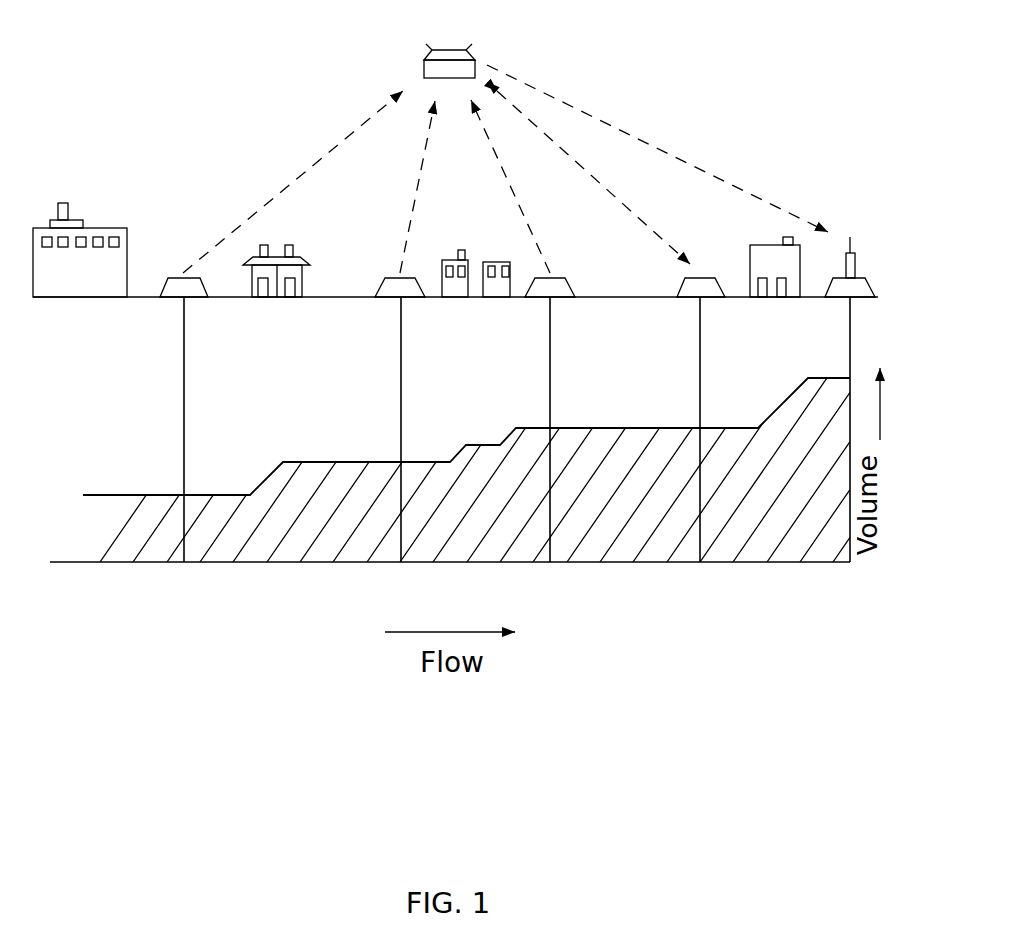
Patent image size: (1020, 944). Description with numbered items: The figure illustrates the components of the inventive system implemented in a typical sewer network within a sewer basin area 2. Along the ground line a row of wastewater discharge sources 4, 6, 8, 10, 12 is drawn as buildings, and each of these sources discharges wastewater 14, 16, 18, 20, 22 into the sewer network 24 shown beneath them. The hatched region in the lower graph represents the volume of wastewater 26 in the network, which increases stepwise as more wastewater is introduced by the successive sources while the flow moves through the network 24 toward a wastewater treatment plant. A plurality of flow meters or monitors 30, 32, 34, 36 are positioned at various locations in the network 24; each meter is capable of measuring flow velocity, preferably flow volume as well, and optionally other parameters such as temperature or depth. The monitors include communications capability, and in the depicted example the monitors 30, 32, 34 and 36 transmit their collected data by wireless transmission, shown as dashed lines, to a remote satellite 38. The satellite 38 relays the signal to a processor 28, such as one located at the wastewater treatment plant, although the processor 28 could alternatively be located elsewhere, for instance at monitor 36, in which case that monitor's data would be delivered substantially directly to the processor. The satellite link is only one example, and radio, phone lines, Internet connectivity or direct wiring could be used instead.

The sewer basin area 2 is at (163, 78).
The wastewater discharge source 4 is at (107, 257).
The wastewater discharge source 6 is at (297, 275).
The wastewater discharge source 8 is at (447, 290).
The wastewater discharge source 10 is at (505, 288).
The wastewater discharge source 12 is at (775, 255).
The wastewater 14 is at (85, 298).
The wastewater 16 is at (303, 370).
The wastewater 18 is at (455, 297).
The wastewater 20 is at (495, 297).
The wastewater 22 is at (775, 300).
The sewer network 24 is at (107, 425).
The volume of wastewater 26 is at (107, 522).
The processor 28 is at (855, 287).
The flow meter or monitor 30 is at (182, 290).
The flow meter or monitor 32 is at (392, 292).
The flow meter or monitor 34 is at (560, 288).
The flow meter or monitor 36 is at (677, 290).
The remote satellite 38 is at (452, 55).